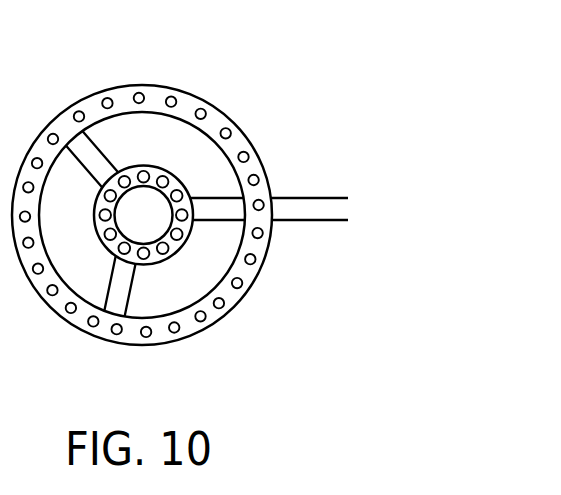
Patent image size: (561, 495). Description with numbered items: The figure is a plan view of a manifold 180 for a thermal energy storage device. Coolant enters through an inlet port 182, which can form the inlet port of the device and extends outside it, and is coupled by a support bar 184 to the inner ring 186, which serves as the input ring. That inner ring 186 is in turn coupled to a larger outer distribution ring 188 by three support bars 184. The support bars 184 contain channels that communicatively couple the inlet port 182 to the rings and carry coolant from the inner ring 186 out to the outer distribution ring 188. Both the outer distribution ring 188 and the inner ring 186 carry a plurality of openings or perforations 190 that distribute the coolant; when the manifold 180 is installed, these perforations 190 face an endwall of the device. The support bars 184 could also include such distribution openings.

The manifold 180 is at (233, 79).
The inlet port 182 is at (313, 208).
The support bar 184 is at (215, 197).
The inner ring 186 is at (165, 259).
The outer distribution ring 188 is at (242, 133).
The openings or perforations 190 is at (106, 99).